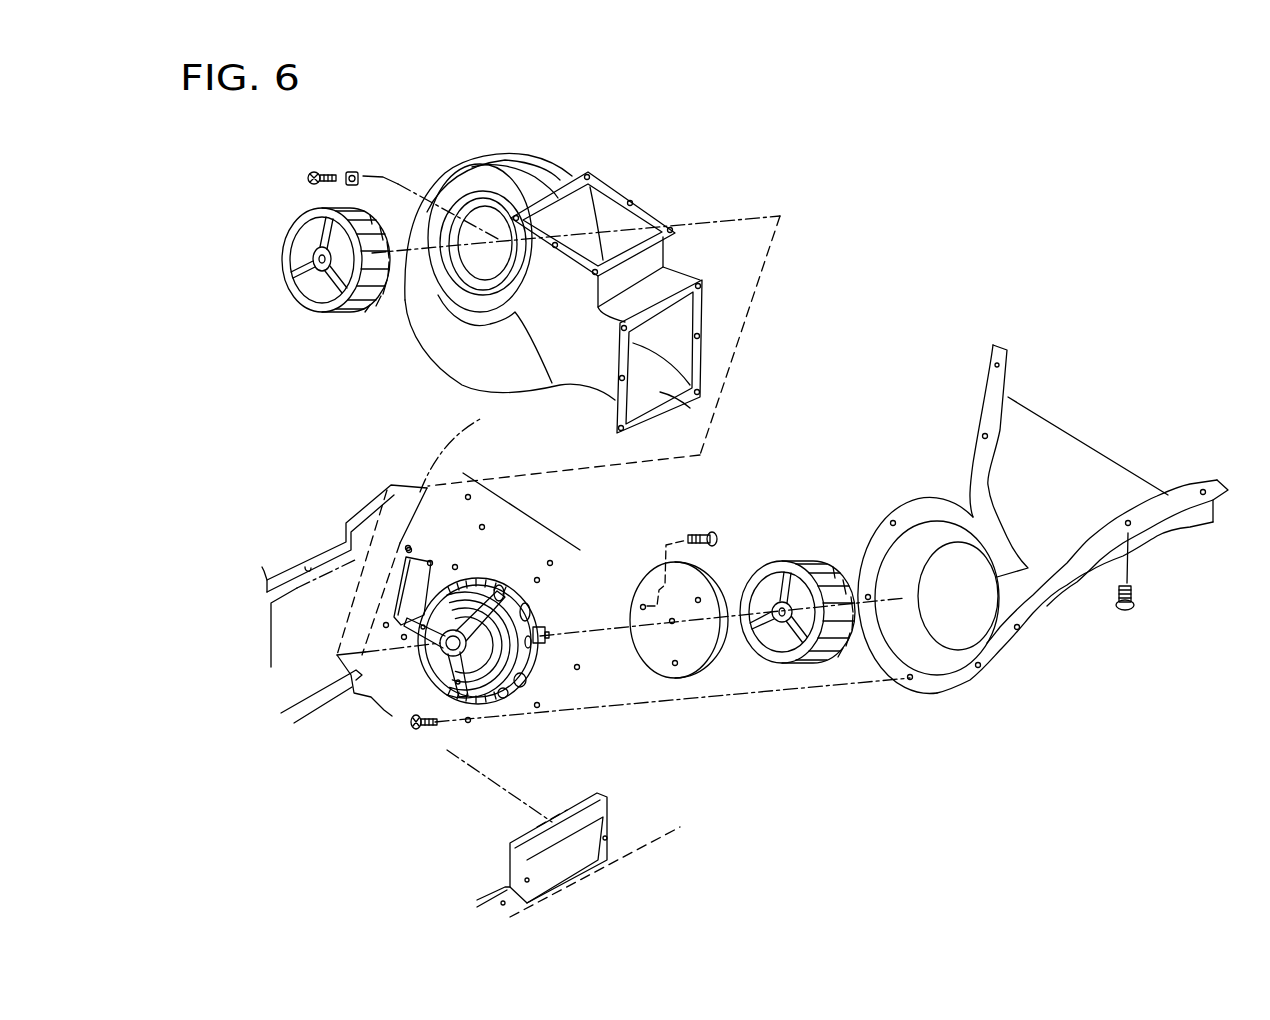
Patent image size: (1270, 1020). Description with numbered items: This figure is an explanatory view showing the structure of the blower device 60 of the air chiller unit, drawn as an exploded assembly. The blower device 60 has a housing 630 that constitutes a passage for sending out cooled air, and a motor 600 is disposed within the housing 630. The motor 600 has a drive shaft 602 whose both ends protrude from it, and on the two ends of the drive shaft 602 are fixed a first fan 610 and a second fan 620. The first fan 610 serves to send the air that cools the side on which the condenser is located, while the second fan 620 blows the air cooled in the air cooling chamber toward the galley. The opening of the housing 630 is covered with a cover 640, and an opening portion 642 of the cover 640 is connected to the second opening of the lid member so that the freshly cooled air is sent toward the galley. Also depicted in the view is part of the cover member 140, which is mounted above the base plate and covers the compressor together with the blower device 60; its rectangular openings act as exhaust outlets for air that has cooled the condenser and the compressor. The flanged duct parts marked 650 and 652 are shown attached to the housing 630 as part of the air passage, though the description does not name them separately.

The blower device 60 is at (742, 184).
The cover member 140 is at (545, 768).
The motor 600 is at (427, 668).
The drive shaft 602 is at (393, 706).
The first fan 610 is at (308, 300).
The second fan 620 is at (785, 566).
The housing 630 is at (480, 360).
The cover 640 is at (1044, 605).
The opening portion 642 is at (1003, 382).
The duct 650 is at (613, 216).
The duct flange 652 is at (660, 385).